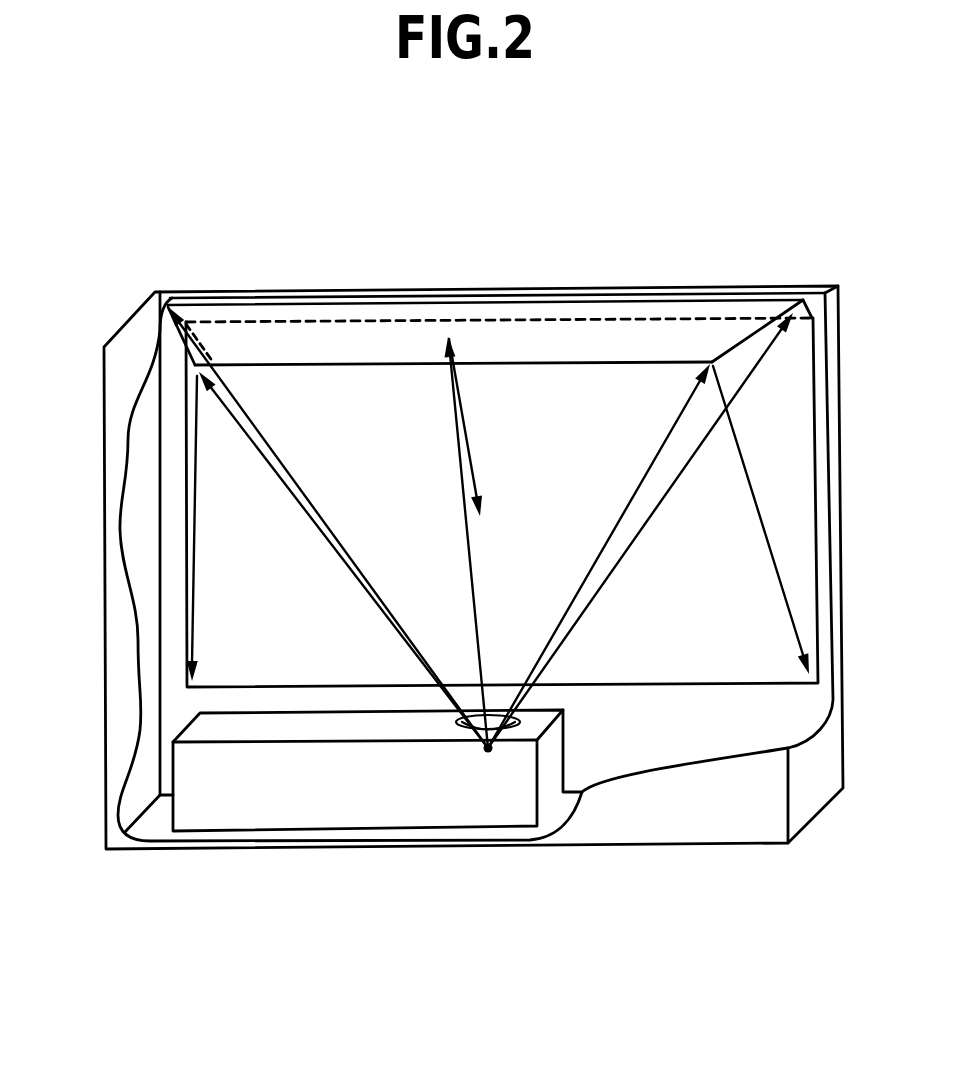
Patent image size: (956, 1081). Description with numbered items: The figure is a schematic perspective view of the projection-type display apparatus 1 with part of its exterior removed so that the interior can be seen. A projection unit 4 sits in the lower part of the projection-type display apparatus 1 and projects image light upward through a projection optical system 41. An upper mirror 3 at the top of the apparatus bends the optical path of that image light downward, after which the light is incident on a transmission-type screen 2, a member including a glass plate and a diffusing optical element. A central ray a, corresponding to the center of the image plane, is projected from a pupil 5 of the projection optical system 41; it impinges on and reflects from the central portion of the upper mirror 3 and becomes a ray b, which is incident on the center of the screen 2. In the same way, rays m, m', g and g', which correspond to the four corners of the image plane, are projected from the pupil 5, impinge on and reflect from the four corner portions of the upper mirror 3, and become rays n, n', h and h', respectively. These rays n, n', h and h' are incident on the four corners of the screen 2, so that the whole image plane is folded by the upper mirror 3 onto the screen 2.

The projection-type display apparatus 1 is at (695, 820).
The transmission-type screen 2 is at (225, 515).
The upper mirror 3 is at (527, 305).
The projection unit 4 is at (327, 812).
The pupil 5 is at (490, 752).
The projection optical system 41 is at (497, 716).
The ray n is at (828, 277).
The ray n' is at (210, 279).
The central ray a is at (473, 572).
The ray b is at (477, 475).
The ray g is at (599, 556).
The ray g' is at (343, 560).
The ray m is at (640, 530).
The ray m' is at (328, 527).
The ray h is at (761, 520).
The ray h' is at (223, 528).